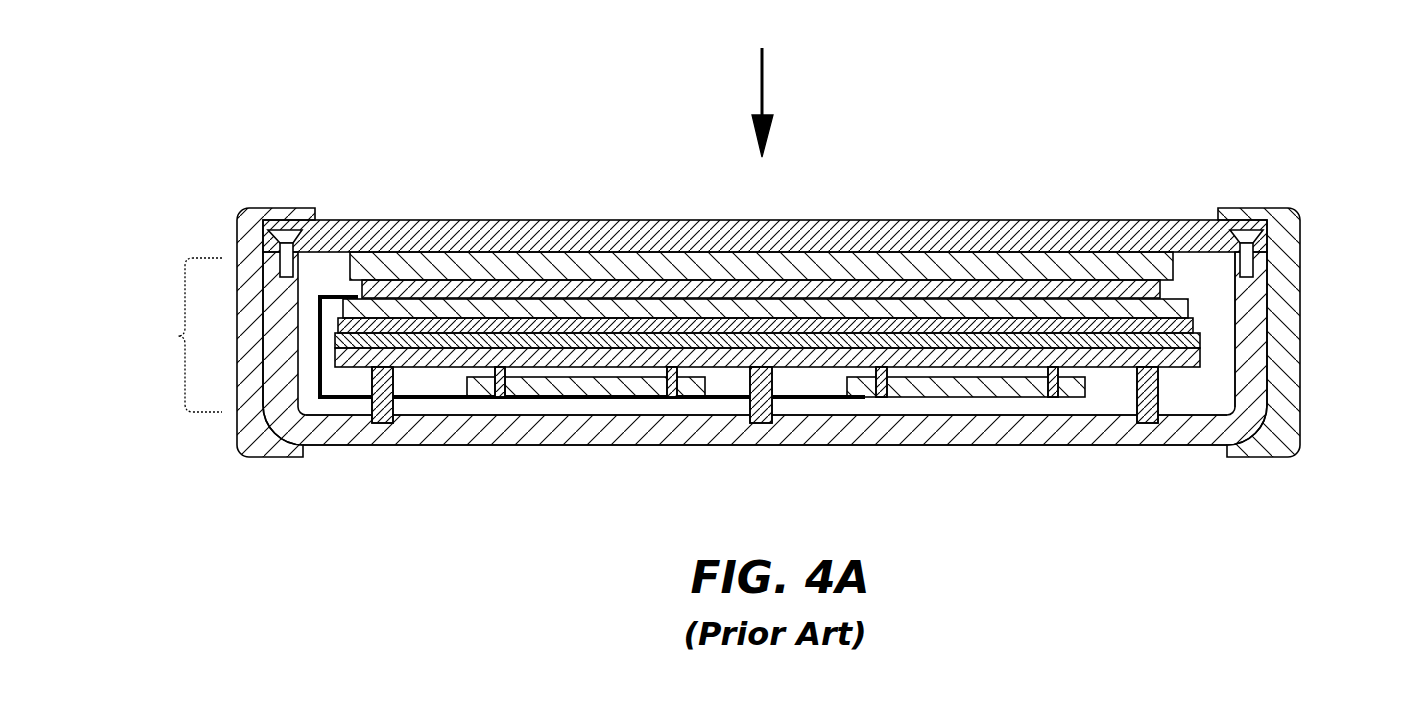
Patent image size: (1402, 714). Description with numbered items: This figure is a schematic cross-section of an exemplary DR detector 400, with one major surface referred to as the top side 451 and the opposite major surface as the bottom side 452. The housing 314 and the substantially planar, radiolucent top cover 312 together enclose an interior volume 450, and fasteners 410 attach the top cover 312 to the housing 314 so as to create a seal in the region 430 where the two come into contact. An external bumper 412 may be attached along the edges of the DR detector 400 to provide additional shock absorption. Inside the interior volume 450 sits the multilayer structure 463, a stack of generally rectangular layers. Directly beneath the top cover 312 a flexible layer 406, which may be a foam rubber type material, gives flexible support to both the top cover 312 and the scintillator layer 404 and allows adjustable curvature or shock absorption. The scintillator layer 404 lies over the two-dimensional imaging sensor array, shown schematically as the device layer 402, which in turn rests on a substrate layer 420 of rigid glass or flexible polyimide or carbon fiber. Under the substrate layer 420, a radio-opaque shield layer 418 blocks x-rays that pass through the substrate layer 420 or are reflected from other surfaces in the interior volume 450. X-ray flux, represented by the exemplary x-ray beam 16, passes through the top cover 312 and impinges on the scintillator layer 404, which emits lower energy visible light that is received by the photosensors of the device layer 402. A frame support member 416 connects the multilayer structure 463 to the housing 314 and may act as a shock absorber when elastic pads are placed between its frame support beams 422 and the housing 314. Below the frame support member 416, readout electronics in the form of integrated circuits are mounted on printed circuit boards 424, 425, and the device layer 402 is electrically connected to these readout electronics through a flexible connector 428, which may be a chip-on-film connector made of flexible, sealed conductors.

The DR detector 400 is at (294, 78).
The top side 451 is at (524, 130).
The bottom side 452 is at (486, 515).
The x-ray beam 16 is at (758, 82).
The region 430 is at (312, 236).
The device layer 402 is at (818, 307).
The scintillator layer 404 is at (912, 287).
The flexible layer 406 is at (1022, 257).
The top cover 312 is at (1142, 233).
The fasteners 410 is at (1248, 258).
The interior volume 450 is at (1212, 332).
The external bumper 412 is at (1285, 370).
The multilayer structure 463 is at (183, 336).
The flexible connector 428 is at (338, 398).
The frame support beams 422 is at (379, 417).
The printed circuit board 424 is at (573, 387).
The printed circuit board 425 is at (1023, 387).
The substrate layer 420 is at (838, 323).
The radio-opaque shield layer 418 is at (965, 343).
The frame support member 416 is at (1105, 357).
The housing 314 is at (1226, 445).